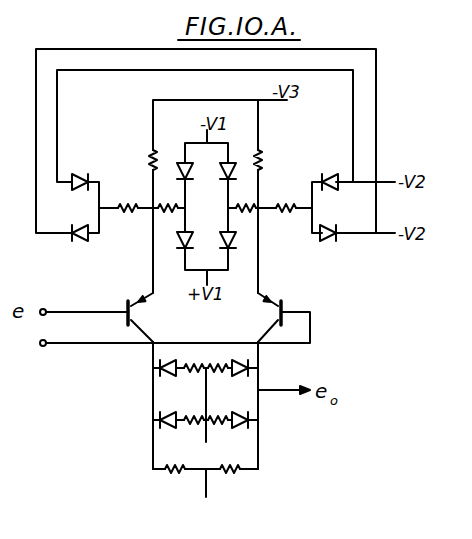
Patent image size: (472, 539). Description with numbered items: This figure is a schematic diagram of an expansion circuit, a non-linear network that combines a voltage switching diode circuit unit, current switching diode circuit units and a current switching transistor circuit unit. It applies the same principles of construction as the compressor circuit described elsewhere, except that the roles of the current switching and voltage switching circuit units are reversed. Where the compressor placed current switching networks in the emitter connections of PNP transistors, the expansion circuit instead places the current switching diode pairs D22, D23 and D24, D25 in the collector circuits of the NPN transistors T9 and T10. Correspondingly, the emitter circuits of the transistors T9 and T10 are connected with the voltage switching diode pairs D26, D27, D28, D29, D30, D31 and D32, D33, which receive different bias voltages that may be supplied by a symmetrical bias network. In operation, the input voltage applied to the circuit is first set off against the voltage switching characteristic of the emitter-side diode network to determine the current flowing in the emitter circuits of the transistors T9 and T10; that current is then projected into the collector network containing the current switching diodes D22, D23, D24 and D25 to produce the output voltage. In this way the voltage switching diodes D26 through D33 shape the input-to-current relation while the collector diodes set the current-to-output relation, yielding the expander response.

The current switching diode D22 is at (160, 386).
The current switching diode D23 is at (247, 387).
The current switching diode D24 is at (152, 450).
The current switching diode D25 is at (250, 445).
The voltage switching diode D26 is at (183, 164).
The voltage switching diode D27 is at (185, 238).
The voltage switching diode D28 is at (230, 164).
The voltage switching diode D29 is at (228, 238).
The voltage switching diode D30 is at (320, 171).
The voltage switching diode D31 is at (320, 246).
The voltage switching diode D32 is at (79, 171).
The voltage switching diode D33 is at (65, 224).
The NPN transistor T9 is at (141, 317).
The NPN transistor T10 is at (256, 317).